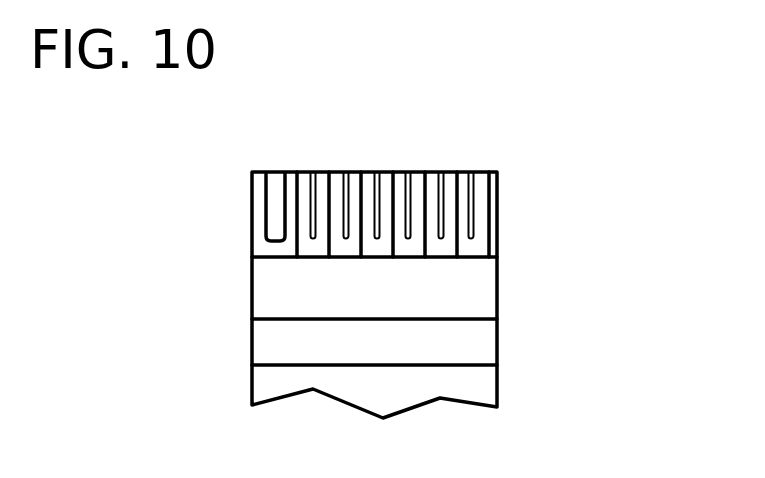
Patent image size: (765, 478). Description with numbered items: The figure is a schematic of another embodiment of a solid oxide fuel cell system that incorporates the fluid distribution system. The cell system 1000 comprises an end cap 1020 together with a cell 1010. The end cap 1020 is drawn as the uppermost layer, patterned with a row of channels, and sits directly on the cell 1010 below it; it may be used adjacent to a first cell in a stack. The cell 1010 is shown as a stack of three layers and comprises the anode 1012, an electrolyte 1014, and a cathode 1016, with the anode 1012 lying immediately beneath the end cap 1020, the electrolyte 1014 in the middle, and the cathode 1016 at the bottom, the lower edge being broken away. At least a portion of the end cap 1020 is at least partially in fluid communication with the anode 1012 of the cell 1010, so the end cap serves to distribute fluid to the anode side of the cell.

The cell system 1000 is at (413, 158).
The end cap 1020 is at (498, 213).
The cell 1010 is at (527, 258).
The anode 1012 is at (248, 287).
The electrolyte 1014 is at (248, 338).
The cathode 1016 is at (248, 390).